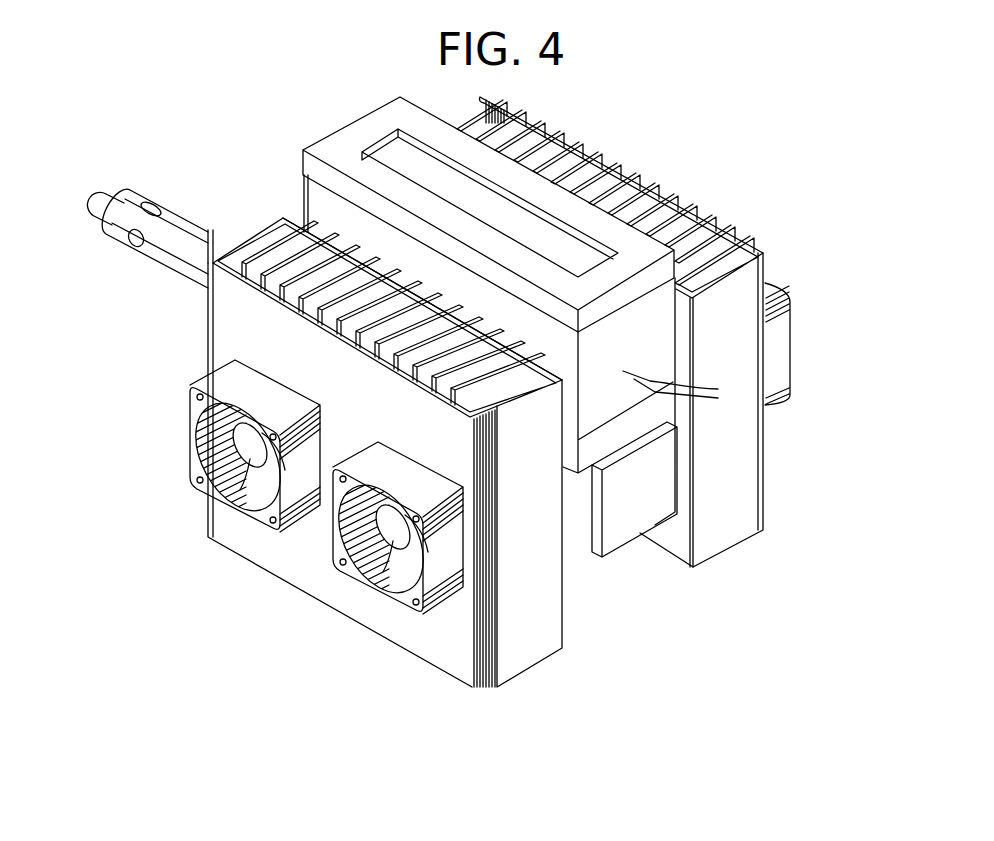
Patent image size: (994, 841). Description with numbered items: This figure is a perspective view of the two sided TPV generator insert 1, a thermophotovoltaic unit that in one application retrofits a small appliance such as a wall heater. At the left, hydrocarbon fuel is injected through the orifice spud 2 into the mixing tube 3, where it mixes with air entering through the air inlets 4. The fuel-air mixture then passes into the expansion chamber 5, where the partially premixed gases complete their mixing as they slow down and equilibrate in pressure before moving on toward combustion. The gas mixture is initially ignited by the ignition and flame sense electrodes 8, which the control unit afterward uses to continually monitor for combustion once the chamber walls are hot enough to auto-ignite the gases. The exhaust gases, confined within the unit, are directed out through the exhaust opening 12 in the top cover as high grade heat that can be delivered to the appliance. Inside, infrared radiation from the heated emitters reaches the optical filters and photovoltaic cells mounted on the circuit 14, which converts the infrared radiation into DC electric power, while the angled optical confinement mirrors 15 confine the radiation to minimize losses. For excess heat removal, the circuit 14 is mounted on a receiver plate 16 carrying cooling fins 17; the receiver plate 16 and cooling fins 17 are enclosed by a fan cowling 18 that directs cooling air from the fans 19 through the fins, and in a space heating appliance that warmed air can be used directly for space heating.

The two sided TPV generator insert 1 is at (125, 573).
The orifice spud 2 is at (100, 203).
The mixing tube 3 is at (180, 258).
The air inlets 4 is at (130, 241).
The expansion chamber 5 is at (582, 510).
The ignition and flame sense electrodes 8 is at (679, 390).
The exhaust opening 12 is at (412, 167).
The circuit 14 is at (315, 235).
The angled optical confinement mirrors 15 is at (325, 235).
The receiver plate 16 is at (694, 292).
The cooling fins 17 is at (722, 252).
The fan cowling 18 is at (741, 515).
The fans 19 is at (780, 355).